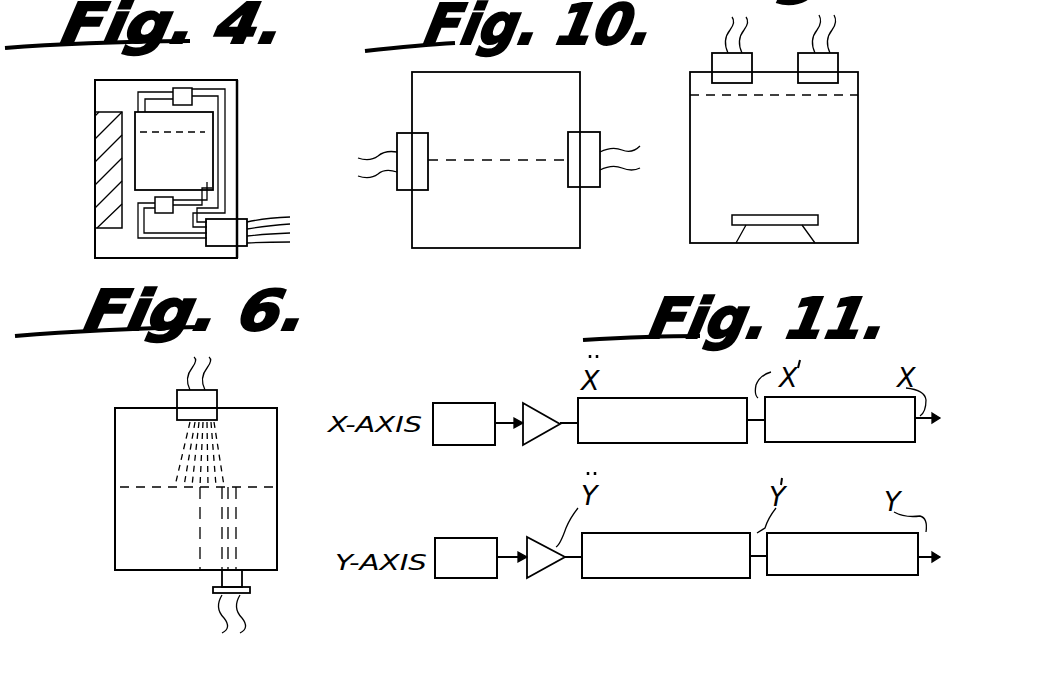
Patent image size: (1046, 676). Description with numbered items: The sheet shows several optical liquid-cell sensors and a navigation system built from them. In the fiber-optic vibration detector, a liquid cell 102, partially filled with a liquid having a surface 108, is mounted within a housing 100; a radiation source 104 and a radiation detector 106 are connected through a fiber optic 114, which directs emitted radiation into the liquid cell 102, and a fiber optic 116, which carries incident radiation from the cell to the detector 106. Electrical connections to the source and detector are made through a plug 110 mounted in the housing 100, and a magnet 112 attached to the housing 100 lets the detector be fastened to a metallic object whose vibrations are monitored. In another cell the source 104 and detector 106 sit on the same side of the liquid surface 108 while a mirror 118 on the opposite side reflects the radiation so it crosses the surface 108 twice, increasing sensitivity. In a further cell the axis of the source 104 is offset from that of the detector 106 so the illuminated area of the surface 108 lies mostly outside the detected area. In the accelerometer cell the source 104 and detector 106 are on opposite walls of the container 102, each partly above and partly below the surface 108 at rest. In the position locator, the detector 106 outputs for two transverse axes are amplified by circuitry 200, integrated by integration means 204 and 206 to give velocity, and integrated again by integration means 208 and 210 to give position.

In FIG. 4, the housing 100 is at (238, 155).
In FIG. 11, the housing 100 is at (454, 408).
In FIG. 4, the liquid cell 102 is at (107, 94).
In FIG. 10, the liquid cell 102 is at (489, 252).
In FIG. 6, the liquid cell 102 is at (278, 520).
In FIG. 4, the radiation source 104 is at (192, 90).
In FIG. 10, the radiation source 104 is at (410, 190).
In FIG. 5, the radiation source 104 is at (712, 64).
In FIG. 6, the radiation source 104 is at (244, 580).
In FIG. 4, the radiation detector 106 is at (172, 197).
In FIG. 10, the radiation detector 106 is at (595, 186).
In FIG. 5, the radiation detector 106 is at (823, 67).
In FIG. 6, the radiation detector 106 is at (217, 397).
In FIG. 4, the liquid surface 108 is at (190, 133).
In FIG. 10, the liquid surface 108 is at (462, 162).
In FIG. 5, the liquid surface 108 is at (752, 98).
In FIG. 6, the liquid surface 108 is at (138, 490).
In FIG. 4, the plug 110 is at (246, 249).
In FIG. 4, the magnet 112 is at (105, 192).
In FIG. 4, the fiber optic 114 is at (160, 92).
In FIG. 4, the fiber optic 116 is at (208, 183).
In FIG. 5, the mirror 118 is at (820, 195).
In FIG. 11, the amplifying circuitry 200 is at (567, 387).
In FIG. 11, the integration means 204 is at (670, 391).
In FIG. 11, the integration means 206 is at (660, 532).
In FIG. 11, the integration means 208 is at (856, 388).
In FIG. 11, the integration means 210 is at (846, 577).